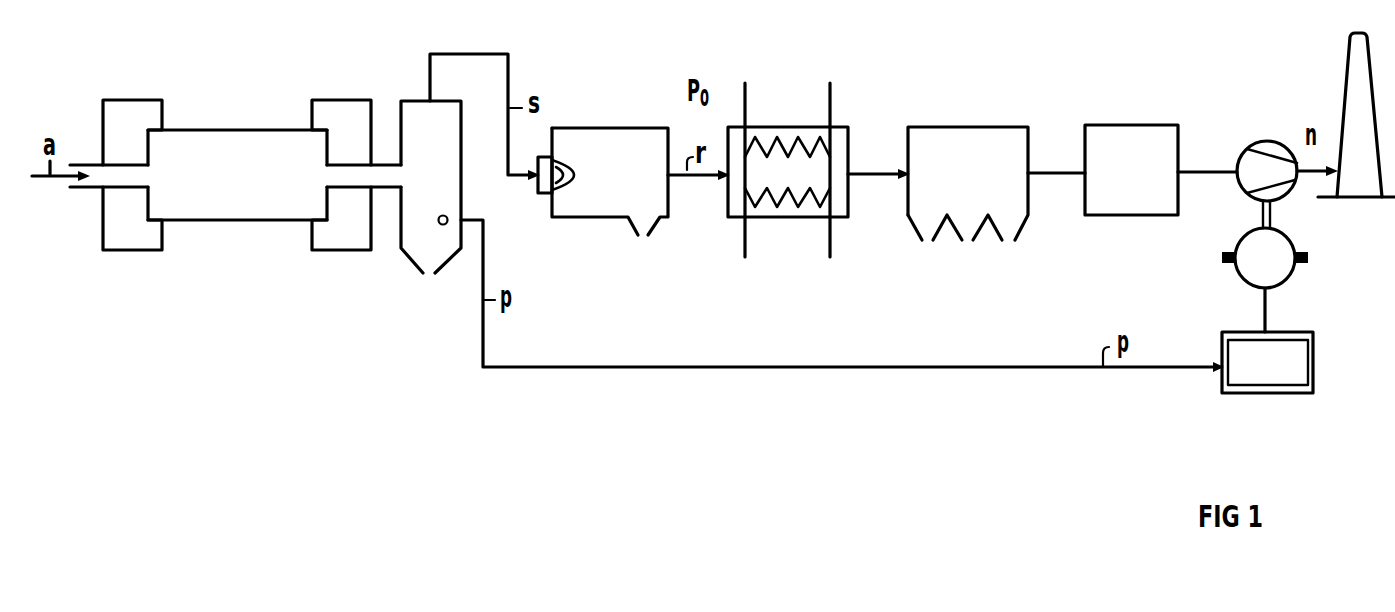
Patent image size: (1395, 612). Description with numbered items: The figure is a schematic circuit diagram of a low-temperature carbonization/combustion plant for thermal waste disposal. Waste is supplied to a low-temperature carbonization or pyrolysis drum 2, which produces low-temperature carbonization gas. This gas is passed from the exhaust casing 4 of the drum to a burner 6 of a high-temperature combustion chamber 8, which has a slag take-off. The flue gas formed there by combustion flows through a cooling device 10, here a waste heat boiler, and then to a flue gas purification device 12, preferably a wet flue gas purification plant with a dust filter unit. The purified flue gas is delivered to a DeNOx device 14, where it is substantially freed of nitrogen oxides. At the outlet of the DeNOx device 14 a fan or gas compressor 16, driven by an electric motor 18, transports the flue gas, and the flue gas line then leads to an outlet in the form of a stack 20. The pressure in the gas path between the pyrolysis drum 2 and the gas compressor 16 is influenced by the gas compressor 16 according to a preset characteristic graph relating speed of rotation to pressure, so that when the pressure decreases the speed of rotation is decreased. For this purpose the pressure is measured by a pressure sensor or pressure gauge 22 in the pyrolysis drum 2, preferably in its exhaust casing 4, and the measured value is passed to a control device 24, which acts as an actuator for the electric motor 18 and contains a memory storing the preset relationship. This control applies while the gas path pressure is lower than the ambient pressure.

The pyrolysis drum 2 is at (272, 110).
The exhaust casing 4 is at (415, 99).
The burner 6 is at (545, 193).
The high-temperature combustion chamber 8 is at (636, 128).
The cooling device 10 is at (768, 127).
The flue gas purification device 12 is at (978, 127).
The DeNOx device 14 is at (1133, 125).
The gas compressor 16 is at (1267, 140).
The electric motor 18 is at (1288, 279).
The stack 20 is at (1348, 60).
The pressure sensor 22 is at (446, 217).
The control device 24 is at (1313, 362).